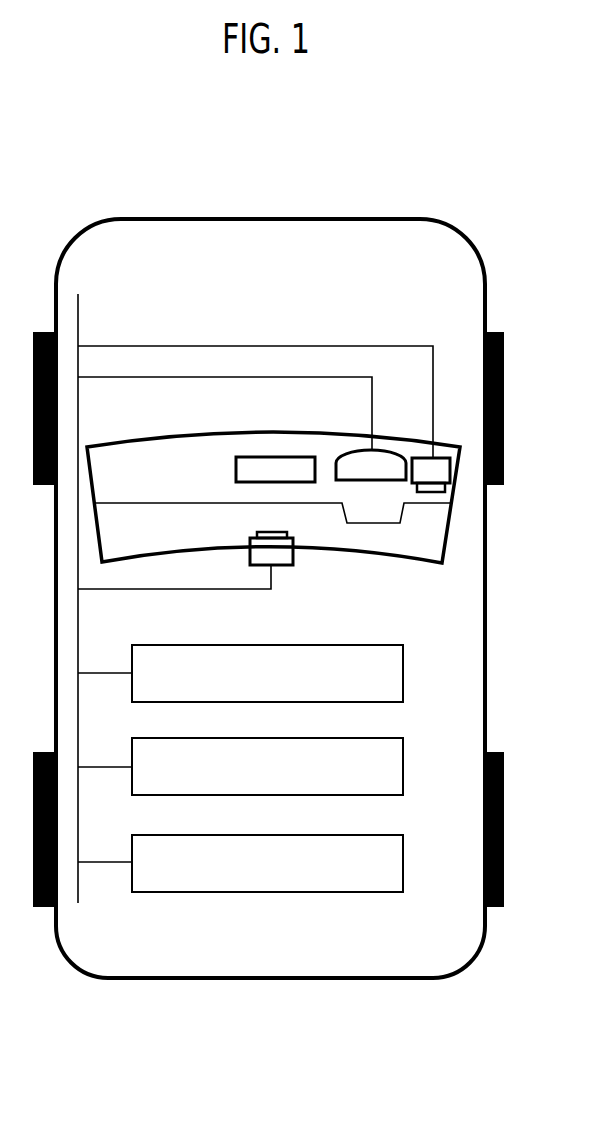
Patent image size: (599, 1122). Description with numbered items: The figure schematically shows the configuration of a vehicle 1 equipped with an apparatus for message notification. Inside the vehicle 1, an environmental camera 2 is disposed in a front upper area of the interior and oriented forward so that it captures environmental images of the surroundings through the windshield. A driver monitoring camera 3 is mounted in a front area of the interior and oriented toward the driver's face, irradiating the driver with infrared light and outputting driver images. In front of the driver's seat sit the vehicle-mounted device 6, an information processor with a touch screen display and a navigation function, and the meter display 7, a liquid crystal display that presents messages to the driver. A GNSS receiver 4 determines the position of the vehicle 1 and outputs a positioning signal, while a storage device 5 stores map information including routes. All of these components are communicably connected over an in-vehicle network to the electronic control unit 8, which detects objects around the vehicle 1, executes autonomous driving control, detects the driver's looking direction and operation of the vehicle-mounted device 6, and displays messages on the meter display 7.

The vehicle 1 is at (399, 209).
The environmental camera 2 is at (293, 563).
The driver monitoring camera 3 is at (435, 457).
The GNSS receiver 4 is at (404, 688).
The storage device 5 is at (404, 783).
The vehicle-mounted device 6 is at (258, 456).
The meter display 7 is at (357, 450).
The electronic control unit (ECU) 8 is at (404, 868).